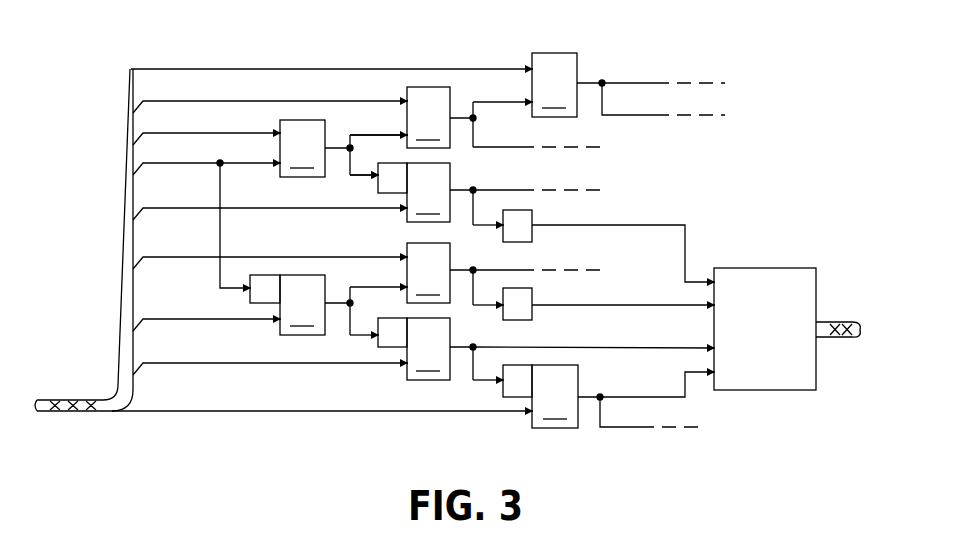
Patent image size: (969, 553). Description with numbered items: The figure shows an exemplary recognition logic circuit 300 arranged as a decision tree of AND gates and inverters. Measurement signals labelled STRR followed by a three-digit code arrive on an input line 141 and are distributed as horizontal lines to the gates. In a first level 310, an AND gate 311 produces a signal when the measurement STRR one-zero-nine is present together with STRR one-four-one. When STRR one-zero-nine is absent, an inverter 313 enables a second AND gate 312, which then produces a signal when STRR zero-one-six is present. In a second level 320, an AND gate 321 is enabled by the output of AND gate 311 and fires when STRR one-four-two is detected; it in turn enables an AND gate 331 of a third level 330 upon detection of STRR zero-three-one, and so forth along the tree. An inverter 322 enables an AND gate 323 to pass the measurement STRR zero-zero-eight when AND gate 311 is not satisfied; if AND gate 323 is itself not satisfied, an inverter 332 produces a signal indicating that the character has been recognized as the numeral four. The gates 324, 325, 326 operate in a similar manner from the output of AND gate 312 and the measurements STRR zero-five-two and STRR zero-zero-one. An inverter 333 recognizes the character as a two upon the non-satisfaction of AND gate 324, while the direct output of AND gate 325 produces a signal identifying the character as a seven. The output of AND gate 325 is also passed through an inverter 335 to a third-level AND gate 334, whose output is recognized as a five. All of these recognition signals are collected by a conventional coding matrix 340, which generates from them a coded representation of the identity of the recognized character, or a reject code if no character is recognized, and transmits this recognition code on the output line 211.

The circuit 300 is at (116, 71).
The line 141 is at (71, 399).
The first level 310 is at (303, 62).
The AND gate 311 is at (302, 148).
The AND gate 312 is at (302, 305).
The inverter 313 is at (262, 273).
The second level 320 is at (416, 61).
The AND gate 321 is at (505, 117).
The inverter 322 is at (400, 164).
The AND gate 323 is at (490, 194).
The AND gate 324 is at (505, 274).
The AND gate 325 is at (546, 349).
The inverter 326 is at (400, 319).
The third level 330 is at (598, 66).
The AND gate 331 is at (628, 85).
The inverter 332 is at (503, 233).
The inverter 333 is at (503, 313).
The AND gate 334 is at (623, 396).
The inverter 335 is at (510, 398).
The coding matrix 340 is at (762, 267).
The line 211 is at (830, 320).